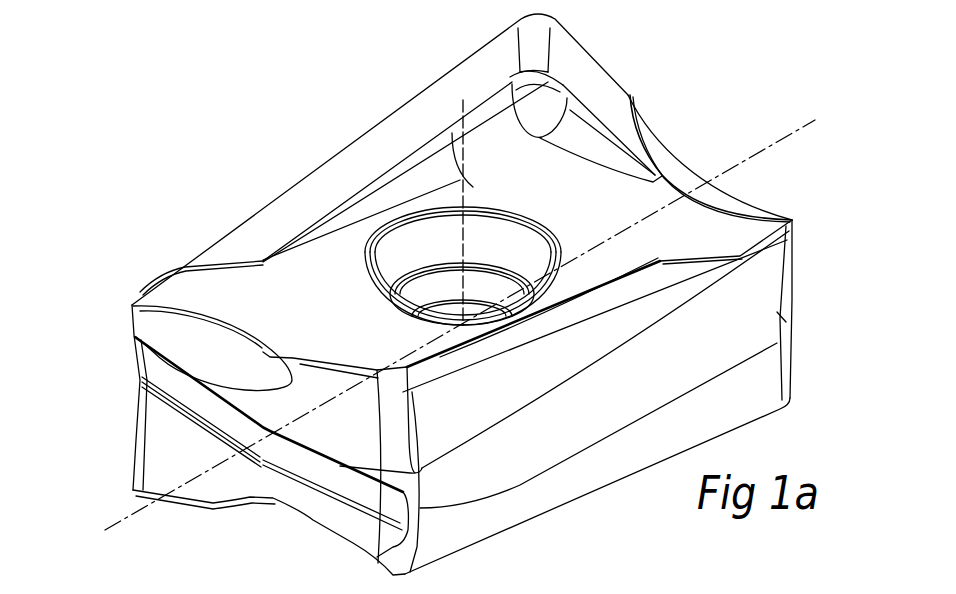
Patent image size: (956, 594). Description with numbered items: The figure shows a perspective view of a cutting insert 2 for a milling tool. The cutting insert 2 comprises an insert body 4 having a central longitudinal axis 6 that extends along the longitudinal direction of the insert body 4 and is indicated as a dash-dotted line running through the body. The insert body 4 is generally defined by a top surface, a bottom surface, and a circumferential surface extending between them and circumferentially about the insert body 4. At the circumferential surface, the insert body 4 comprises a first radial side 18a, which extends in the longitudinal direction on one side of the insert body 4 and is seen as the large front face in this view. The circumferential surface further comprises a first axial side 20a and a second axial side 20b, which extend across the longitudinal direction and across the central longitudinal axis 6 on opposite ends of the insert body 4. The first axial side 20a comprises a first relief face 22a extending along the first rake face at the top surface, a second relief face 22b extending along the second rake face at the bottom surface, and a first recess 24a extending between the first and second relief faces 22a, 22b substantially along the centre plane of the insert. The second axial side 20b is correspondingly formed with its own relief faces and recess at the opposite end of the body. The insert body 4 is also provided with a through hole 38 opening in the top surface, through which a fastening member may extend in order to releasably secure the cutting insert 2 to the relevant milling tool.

The cutting insert 2 is at (333, 98).
The insert body 4 is at (747, 330).
The central longitudinal axis 6 is at (137, 517).
The first radial side 18a is at (578, 425).
The first axial side 20a is at (123, 478).
The second axial side 20b is at (679, 146).
The first relief face 22a is at (274, 400).
The second relief face 22b is at (215, 483).
The first recess 24a is at (333, 477).
The through hole 38 is at (415, 243).